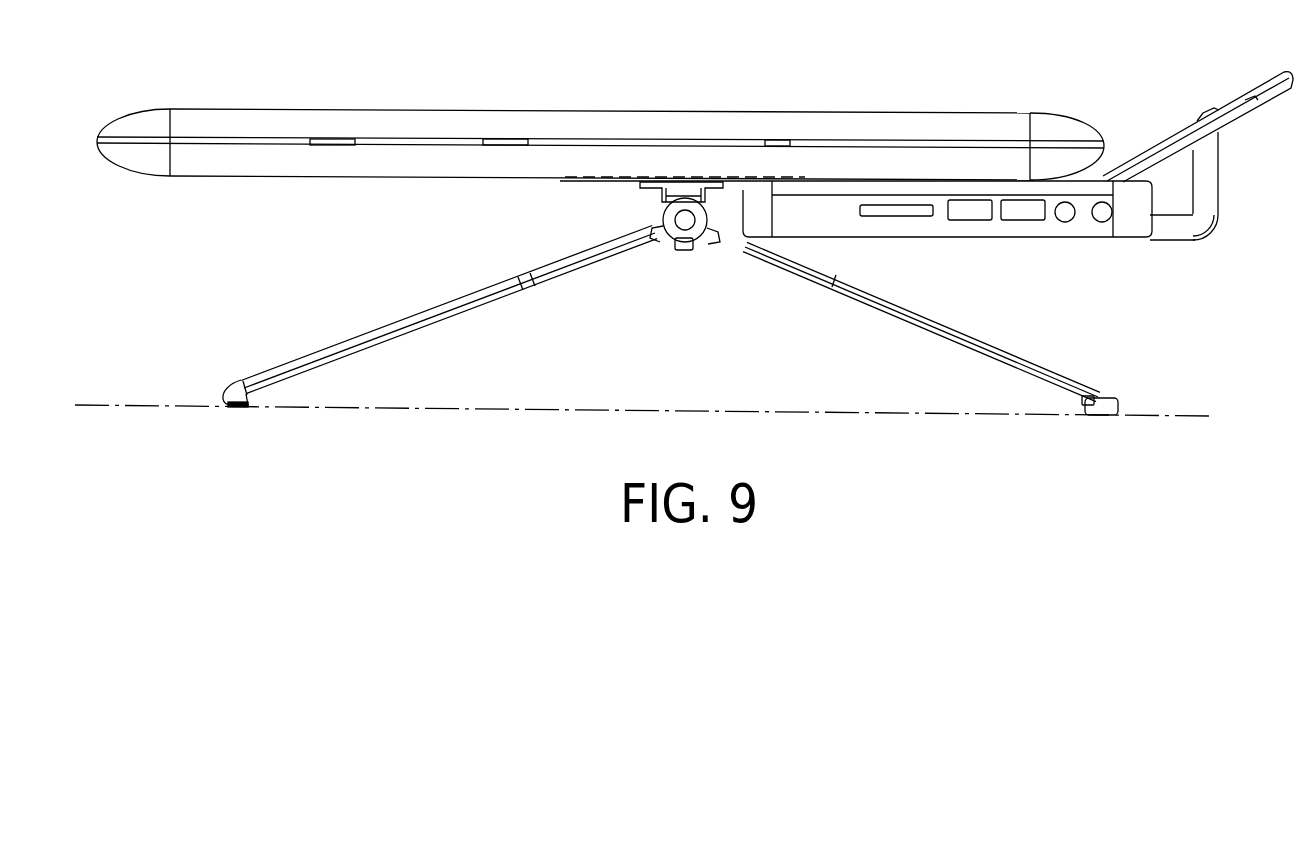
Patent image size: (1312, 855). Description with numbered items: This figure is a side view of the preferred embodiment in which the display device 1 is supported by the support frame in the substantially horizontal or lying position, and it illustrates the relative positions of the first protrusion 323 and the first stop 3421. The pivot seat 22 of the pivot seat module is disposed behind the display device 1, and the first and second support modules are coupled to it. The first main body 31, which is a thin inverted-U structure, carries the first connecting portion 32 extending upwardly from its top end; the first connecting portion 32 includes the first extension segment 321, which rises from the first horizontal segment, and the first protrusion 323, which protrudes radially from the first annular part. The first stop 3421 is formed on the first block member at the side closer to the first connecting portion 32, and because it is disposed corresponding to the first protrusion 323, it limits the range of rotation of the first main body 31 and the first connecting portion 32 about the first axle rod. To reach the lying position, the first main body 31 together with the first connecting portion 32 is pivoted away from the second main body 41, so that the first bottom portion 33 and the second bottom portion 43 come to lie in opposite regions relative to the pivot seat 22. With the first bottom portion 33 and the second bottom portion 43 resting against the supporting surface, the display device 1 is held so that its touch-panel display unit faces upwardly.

The display device 1 is at (868, 113).
The pivot seat 22 is at (715, 190).
The first stop 3421 is at (663, 210).
The first connecting portion 32 is at (661, 244).
The first extension segment 321 is at (656, 240).
The first protrusion 323 is at (700, 247).
The first main body 31 is at (375, 323).
The first bottom portion 33 is at (233, 410).
The second main body 41 is at (1032, 366).
The second bottom portion 43 is at (1105, 418).